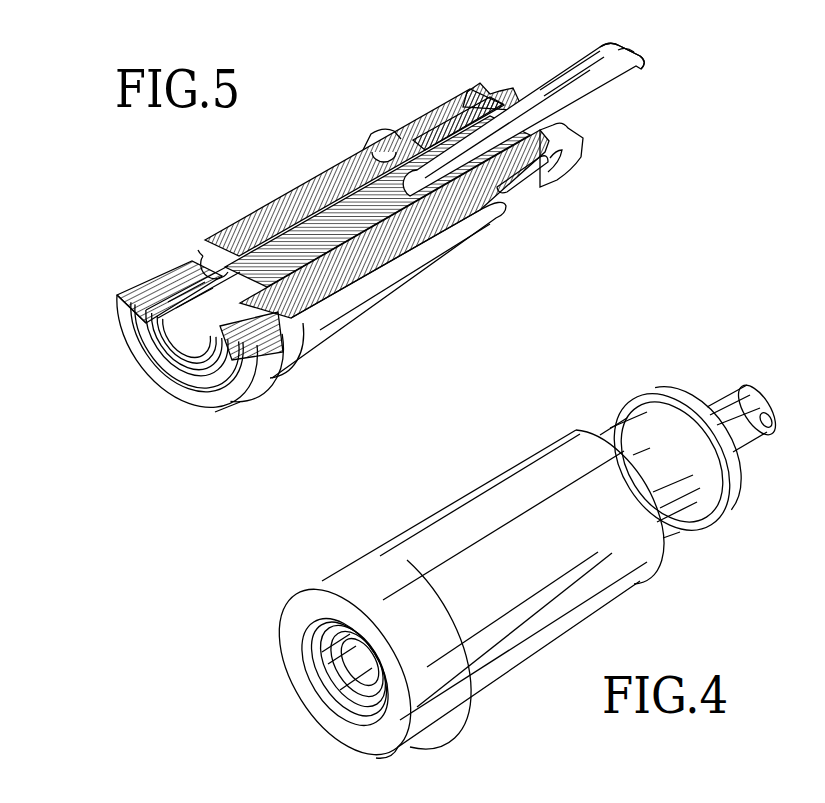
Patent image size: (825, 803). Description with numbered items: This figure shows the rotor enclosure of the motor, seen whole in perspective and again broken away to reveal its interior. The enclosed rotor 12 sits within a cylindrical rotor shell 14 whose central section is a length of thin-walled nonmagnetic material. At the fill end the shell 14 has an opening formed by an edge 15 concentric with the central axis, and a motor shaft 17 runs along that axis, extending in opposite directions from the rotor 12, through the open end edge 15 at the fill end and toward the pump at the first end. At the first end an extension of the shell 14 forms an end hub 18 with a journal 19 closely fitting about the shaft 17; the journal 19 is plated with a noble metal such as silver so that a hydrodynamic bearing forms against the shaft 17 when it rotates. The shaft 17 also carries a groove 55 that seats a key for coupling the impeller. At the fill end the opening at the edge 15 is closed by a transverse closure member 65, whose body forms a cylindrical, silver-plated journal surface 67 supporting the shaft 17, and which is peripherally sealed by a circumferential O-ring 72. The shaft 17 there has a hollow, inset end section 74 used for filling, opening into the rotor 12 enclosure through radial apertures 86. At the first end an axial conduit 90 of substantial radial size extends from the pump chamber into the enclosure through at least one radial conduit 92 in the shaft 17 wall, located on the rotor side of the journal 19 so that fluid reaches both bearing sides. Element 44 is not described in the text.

In FIG. 5, the rotor 12 is at (232, 236).
In FIG. 5, the cylindrical rotor shell 14 is at (282, 200).
In FIG. 4, the cylindrical rotor shell 14 is at (490, 480).
In FIG. 5, the edge 15 is at (117, 294).
In FIG. 5, the motor shaft 17 is at (526, 92).
In FIG. 4, the motor shaft 17 is at (720, 402).
In FIG. 5, the end hub 18 is at (412, 130).
In FIG. 4, the end hub 18 is at (606, 430).
In FIG. 5, the journal 19 is at (436, 126).
In FIG. 5, the latch 44 is at (566, 166).
In FIG. 4, the latch 44 is at (656, 404).
In FIG. 5, the groove 55 is at (584, 72).
In FIG. 5, the closure member 65 is at (264, 388).
In FIG. 4, the closure member 65 is at (290, 622).
In FIG. 5, the journal surface 67 is at (202, 390).
In FIG. 5, the O-ring 72 is at (163, 276).
In FIG. 5, the hollow end section 74 is at (168, 358).
In FIG. 4, the hollow end section 74 is at (318, 694).
In FIG. 5, the radial apertures 86 is at (202, 262).
In FIG. 5, the axial conduit 90 is at (600, 82).
In FIG. 5, the radial conduit 92 is at (383, 138).